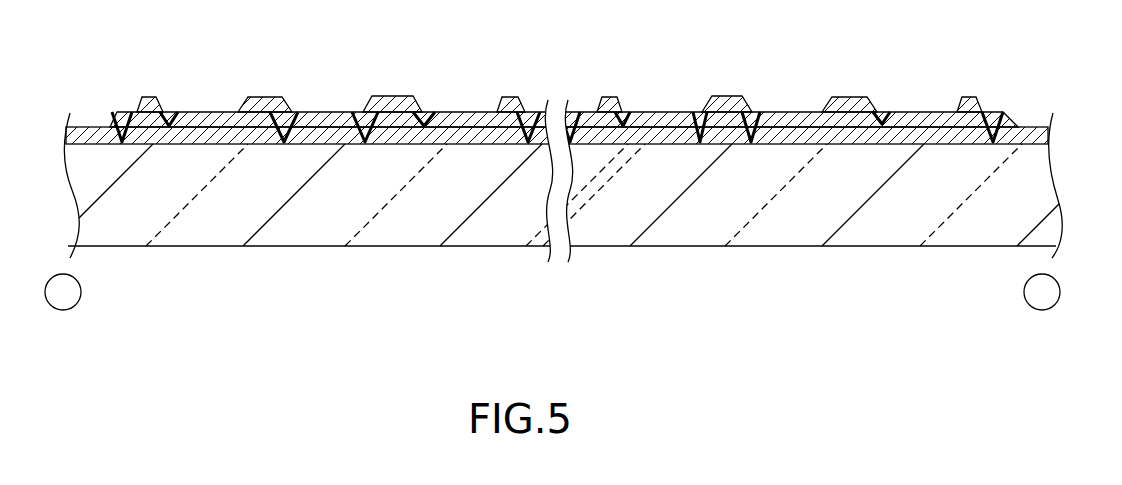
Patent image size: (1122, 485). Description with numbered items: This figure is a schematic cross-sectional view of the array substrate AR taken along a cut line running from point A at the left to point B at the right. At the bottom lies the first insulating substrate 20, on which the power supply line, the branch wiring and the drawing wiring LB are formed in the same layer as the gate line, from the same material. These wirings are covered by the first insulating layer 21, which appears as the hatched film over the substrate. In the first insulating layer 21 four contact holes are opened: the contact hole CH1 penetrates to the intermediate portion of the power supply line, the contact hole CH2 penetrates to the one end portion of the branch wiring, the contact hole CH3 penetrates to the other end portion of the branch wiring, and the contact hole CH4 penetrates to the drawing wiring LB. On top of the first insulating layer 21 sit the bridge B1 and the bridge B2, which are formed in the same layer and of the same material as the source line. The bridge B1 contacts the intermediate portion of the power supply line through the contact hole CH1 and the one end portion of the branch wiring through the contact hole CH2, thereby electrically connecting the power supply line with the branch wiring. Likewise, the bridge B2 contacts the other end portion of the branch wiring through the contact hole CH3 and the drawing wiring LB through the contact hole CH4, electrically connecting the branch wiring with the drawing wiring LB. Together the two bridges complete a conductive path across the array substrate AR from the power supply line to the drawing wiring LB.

The first insulating substrate 20 is at (80, 191).
The first insulating layer 21 is at (66, 133).
The contact hole CH1 is at (165, 112).
The bridge B1 is at (270, 105).
The contact hole CH2 is at (425, 117).
The contact hole CH3 is at (628, 118).
The bridge B2 is at (850, 105).
The contact hole CH4 is at (883, 119).
The array substrate AR is at (1027, 92).
The drawing wiring LB is at (928, 142).
The line A-B end point A is at (63, 292).
The line A-B end point B is at (1042, 292).